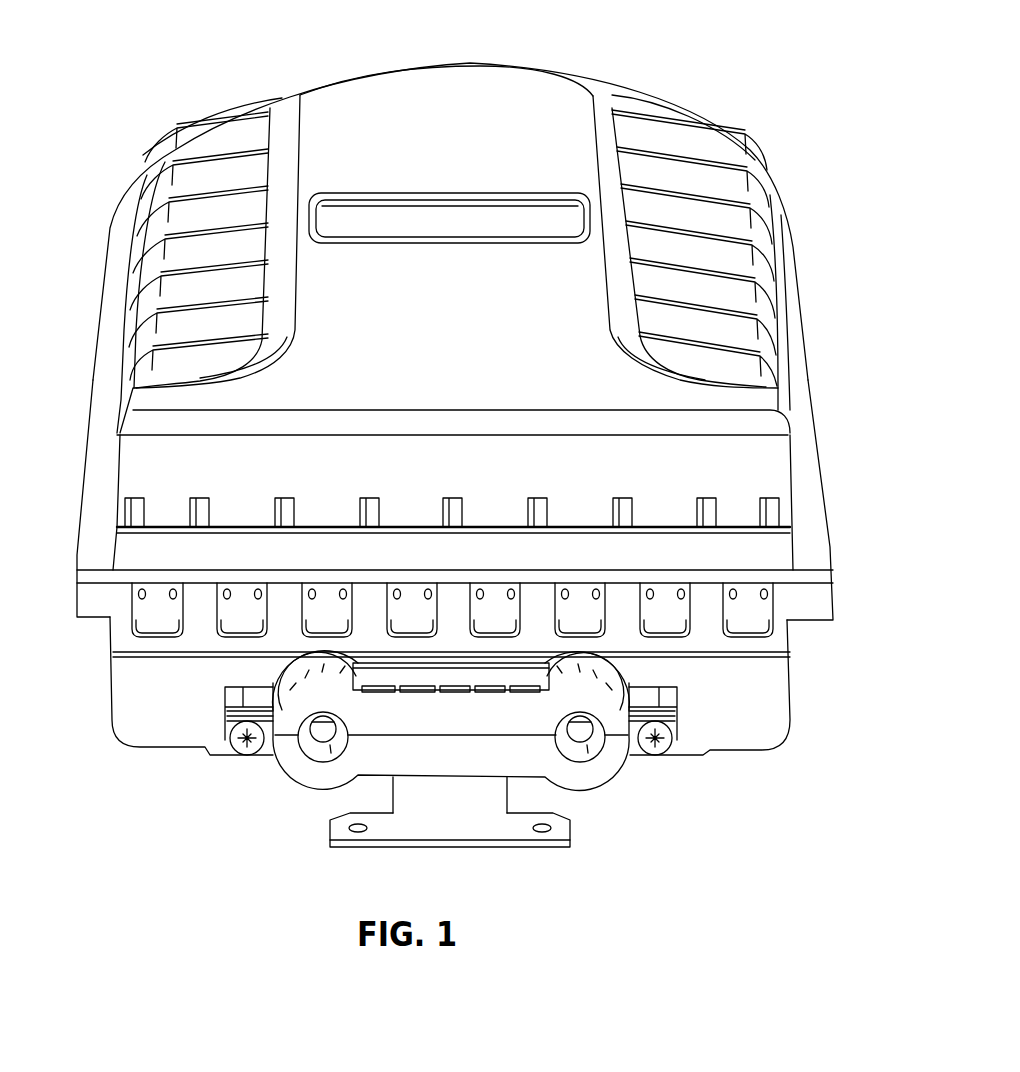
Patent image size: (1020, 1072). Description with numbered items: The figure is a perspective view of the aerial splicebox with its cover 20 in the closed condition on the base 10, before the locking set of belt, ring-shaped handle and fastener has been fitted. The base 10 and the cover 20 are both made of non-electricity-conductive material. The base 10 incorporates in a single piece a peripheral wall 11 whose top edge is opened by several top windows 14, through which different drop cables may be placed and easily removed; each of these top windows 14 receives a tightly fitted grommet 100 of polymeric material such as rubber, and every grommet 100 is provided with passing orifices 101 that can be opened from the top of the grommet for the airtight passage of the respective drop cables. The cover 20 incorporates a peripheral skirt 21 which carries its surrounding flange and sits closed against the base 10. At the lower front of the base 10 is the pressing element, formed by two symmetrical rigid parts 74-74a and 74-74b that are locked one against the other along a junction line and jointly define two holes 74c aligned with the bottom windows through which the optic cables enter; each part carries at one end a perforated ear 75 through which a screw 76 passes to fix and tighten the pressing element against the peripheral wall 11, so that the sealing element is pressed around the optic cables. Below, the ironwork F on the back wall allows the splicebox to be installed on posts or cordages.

The base 10 is at (110, 745).
The peripheral wall 11 is at (198, 641).
The top windows 14 is at (430, 624).
The cover 20 is at (480, 92).
The peripheral skirt 21 is at (295, 553).
The pressing element first symmetrical part 74-74a is at (421, 718).
The pressing element second symmetrical part 74-74b is at (480, 760).
The holes 74c is at (330, 740).
The perforated ear 75 is at (233, 693).
The screw 76 is at (224, 745).
The grommets 100 is at (490, 605).
The passing orifices 101 is at (140, 586).
The ironwork F is at (410, 833).